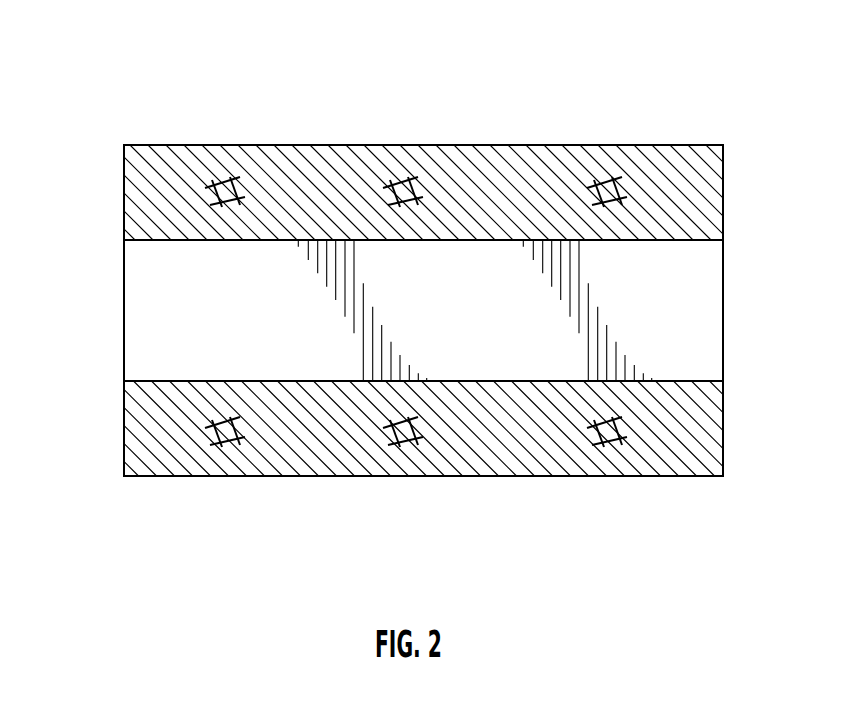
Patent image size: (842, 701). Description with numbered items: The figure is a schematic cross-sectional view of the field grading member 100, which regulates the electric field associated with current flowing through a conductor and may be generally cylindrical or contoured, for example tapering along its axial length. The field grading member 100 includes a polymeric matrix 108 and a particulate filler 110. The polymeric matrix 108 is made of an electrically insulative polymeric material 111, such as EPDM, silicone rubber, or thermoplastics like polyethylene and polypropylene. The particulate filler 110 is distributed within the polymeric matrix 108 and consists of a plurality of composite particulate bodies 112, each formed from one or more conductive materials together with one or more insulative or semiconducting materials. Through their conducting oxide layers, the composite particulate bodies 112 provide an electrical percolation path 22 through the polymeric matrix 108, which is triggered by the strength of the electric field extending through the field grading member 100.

The field grading member 100 is at (200, 514).
The polymeric matrix 108 is at (323, 146).
The electrically insulative polymeric material 111 is at (523, 160).
The particulate filler 110 is at (221, 440).
The composite particulate bodies 112 is at (403, 423).
The electrical percolation path 22 is at (580, 378).